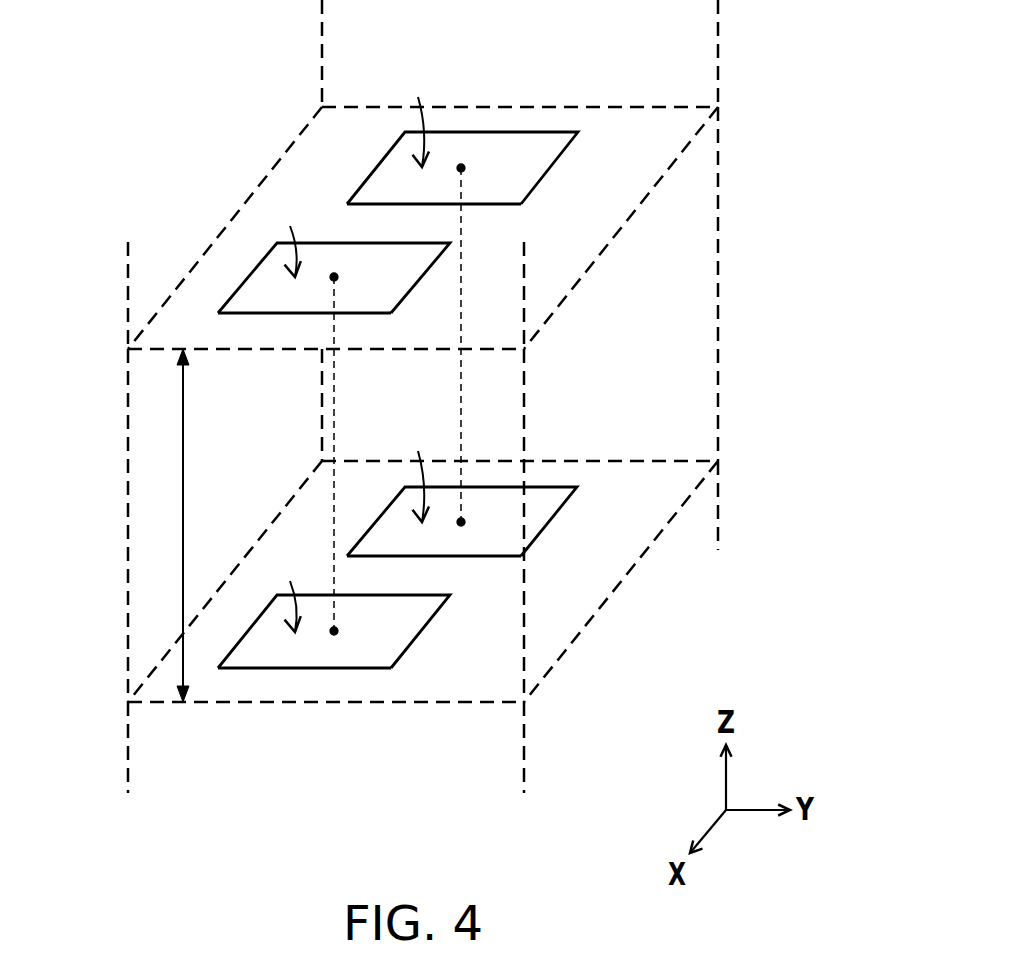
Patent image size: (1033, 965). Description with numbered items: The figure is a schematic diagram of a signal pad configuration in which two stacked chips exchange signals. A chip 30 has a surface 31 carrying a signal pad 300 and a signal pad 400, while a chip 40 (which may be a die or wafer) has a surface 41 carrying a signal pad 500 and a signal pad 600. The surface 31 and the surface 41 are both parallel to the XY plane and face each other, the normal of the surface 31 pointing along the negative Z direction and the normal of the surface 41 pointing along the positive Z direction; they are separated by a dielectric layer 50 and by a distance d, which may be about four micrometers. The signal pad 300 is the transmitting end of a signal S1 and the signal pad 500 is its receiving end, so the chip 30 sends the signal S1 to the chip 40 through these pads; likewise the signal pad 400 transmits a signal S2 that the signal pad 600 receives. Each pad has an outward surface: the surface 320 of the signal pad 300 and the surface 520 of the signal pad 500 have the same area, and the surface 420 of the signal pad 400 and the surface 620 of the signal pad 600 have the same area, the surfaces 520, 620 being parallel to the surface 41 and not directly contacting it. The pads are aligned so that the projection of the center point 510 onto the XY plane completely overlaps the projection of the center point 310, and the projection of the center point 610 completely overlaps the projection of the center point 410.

The chip 30 is at (150, 287).
The surface of the chip 31 is at (565, 262).
The chip 40 is at (152, 747).
The surface of the chip 41 is at (575, 610).
The dielectric layer 50 is at (150, 505).
The signal pad 300 is at (428, 277).
The center point 310 is at (334, 277).
The surface of the signal pad 320 is at (368, 302).
The signal pad 400 is at (552, 165).
The center point 410 is at (461, 168).
The surface of the signal pad 420 is at (512, 190).
The signal pad 500 is at (428, 632).
The center point 510 is at (334, 631).
The surface of the signal pad 520 is at (368, 655).
The signal pad 600 is at (552, 518).
The center point 610 is at (461, 522).
The surface of the signal pad 620 is at (512, 543).
The signal S1 is at (292, 412).
The signal S2 is at (420, 292).
The distance d is at (189, 525).